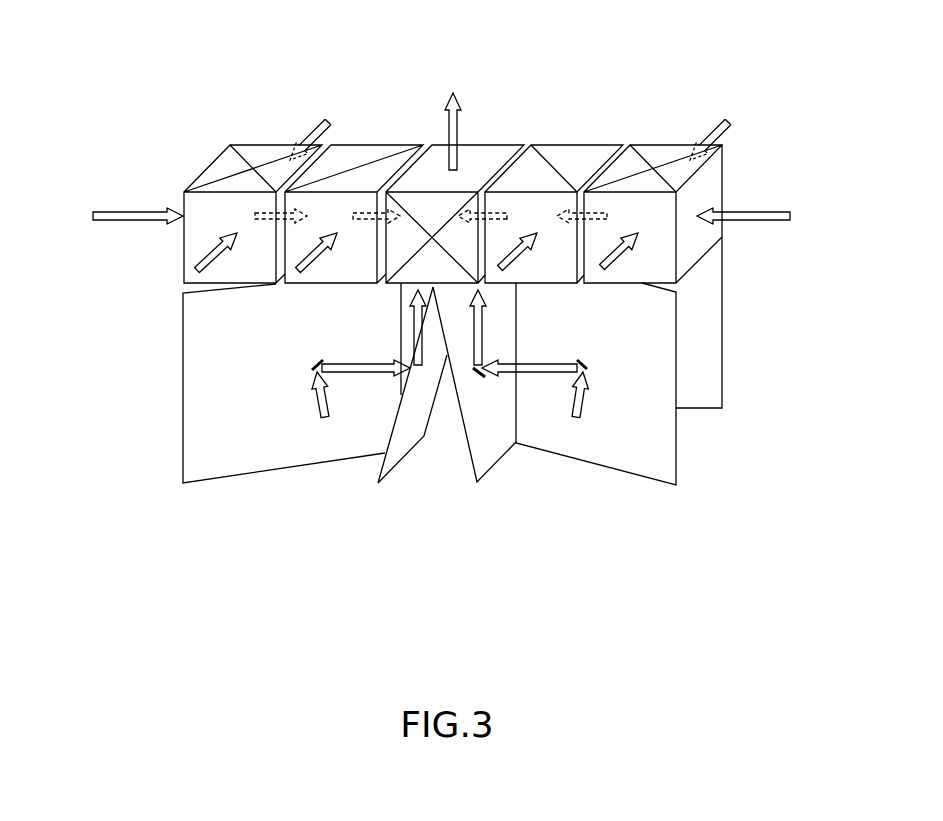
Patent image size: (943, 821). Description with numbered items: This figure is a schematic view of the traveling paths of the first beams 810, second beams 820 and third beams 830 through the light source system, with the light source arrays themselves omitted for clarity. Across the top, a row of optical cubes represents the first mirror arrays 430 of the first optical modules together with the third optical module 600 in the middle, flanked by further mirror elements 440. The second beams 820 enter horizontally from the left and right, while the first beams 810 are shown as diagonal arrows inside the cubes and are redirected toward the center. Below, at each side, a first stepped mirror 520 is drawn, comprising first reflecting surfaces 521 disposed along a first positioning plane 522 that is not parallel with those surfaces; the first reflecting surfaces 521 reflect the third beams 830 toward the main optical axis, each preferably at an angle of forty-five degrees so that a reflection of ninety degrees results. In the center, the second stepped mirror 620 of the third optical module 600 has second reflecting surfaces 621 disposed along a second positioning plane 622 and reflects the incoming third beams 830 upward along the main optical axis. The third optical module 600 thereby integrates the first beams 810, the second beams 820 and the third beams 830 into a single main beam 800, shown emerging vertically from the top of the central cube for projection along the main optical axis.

The first mirror array 430 is at (251, 139).
The second optical cube 440 is at (362, 139).
The first stepped mirror 520 is at (461, 315).
The first reflecting surface 521 is at (590, 371).
The first positioning plane 522 is at (663, 460).
The third optical module 600 is at (474, 134).
The second stepped mirror 620 is at (446, 427).
The second reflecting surface 621 is at (480, 377).
The second positioning plane 622 is at (390, 453).
The main beam 800 is at (453, 91).
The first beam 810 is at (316, 128).
The second beam 820 is at (140, 214).
The third beam 830 is at (412, 298).